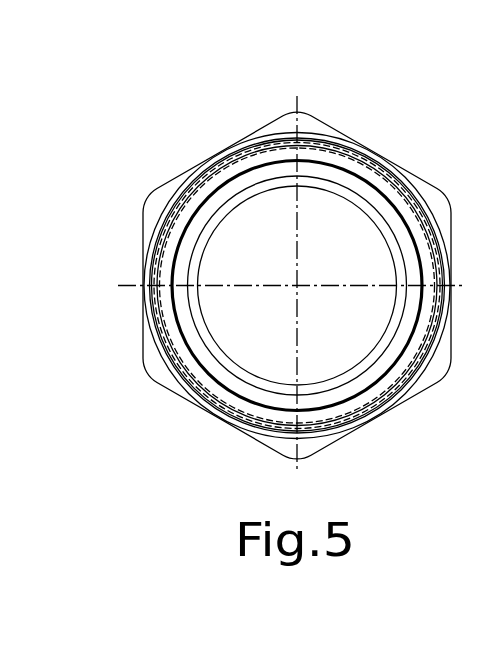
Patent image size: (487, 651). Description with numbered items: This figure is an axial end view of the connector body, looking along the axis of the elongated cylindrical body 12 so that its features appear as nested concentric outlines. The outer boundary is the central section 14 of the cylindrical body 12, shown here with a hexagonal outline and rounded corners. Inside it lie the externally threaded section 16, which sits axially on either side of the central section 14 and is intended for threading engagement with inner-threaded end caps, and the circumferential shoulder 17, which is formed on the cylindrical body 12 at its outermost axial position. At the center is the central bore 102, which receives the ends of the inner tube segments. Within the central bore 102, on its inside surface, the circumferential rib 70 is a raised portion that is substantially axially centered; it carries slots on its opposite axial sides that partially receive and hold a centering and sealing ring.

The cylindrical body 12 is at (264, 242).
The central section 14 is at (158, 205).
The externally threaded section 16 is at (155, 340).
The circumferential shoulder 17 is at (240, 170).
The circumferential rib 70 is at (335, 183).
The central bore 102 is at (208, 262).